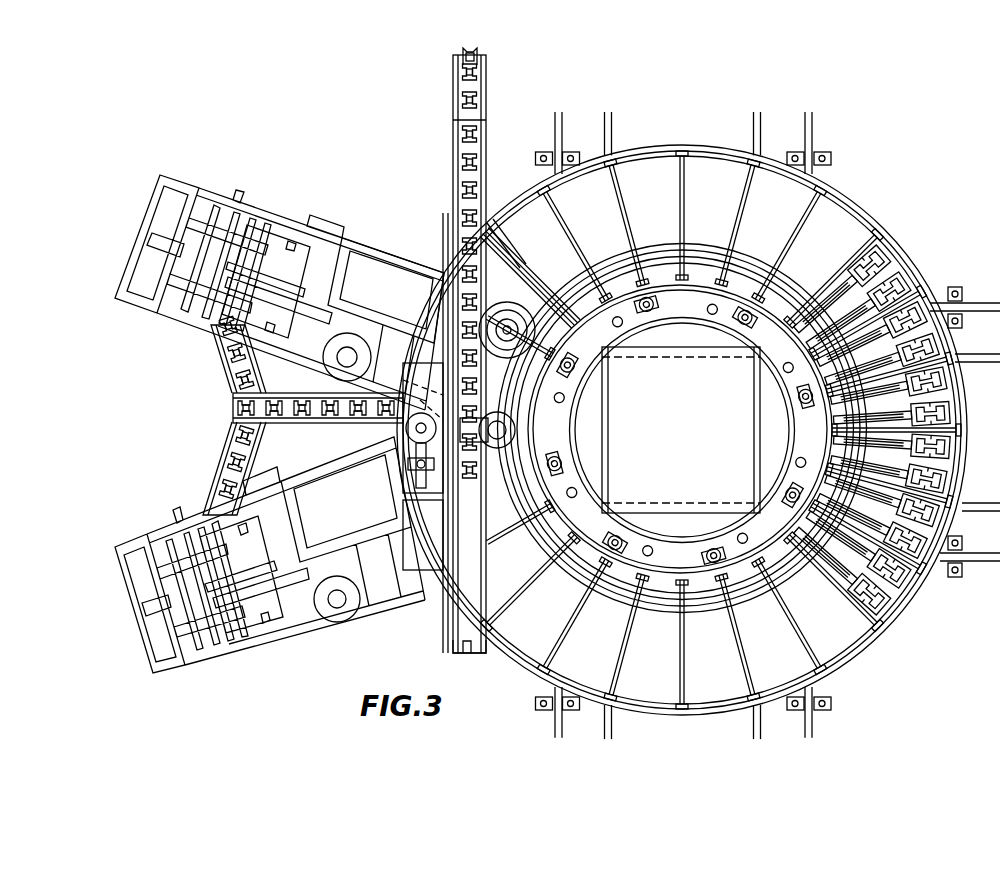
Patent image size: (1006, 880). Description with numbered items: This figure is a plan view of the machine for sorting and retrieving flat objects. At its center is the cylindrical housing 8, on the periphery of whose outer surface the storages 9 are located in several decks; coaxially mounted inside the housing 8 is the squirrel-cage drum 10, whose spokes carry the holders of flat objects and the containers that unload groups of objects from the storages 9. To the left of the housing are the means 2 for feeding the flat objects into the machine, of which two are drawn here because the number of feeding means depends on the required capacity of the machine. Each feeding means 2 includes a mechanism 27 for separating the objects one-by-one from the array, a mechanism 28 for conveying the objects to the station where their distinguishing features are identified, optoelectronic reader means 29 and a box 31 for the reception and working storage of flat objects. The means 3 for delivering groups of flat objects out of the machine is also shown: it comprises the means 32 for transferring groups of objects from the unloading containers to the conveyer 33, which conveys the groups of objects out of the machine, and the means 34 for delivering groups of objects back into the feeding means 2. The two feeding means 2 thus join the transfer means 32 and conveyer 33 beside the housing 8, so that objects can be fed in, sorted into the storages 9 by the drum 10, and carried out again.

The means for feeding the flat objects 2 is at (248, 338).
The means for delivering groups of flat objects out of the machine 3 is at (453, 183).
The cylindrical housing 8 is at (838, 203).
The storages 9 is at (905, 266).
The squirrel-cage drum 10 is at (818, 432).
The mechanism for separating the objects one-by-one from the array 27 is at (243, 206).
The mechanism for conveying the objects 28 is at (288, 244).
The optoelectronic reader means 29 is at (384, 260).
The box 31 is at (445, 556).
The means for transferring groups of objects 32 is at (412, 432).
The conveyer 33 is at (478, 57).
The means for delivering groups of objects into the feeding means 34 is at (233, 404).